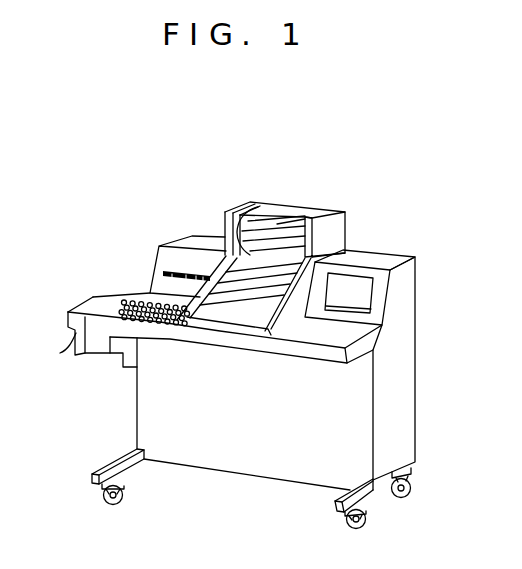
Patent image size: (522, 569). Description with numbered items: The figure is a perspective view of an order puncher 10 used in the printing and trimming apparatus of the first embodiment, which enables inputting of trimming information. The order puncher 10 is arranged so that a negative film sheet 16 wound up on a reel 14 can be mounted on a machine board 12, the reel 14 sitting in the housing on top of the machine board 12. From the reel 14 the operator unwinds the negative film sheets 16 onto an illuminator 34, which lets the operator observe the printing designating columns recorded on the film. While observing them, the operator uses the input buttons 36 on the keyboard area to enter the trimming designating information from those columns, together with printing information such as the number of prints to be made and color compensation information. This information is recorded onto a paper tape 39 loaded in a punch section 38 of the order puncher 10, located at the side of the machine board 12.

The order puncher 10 is at (370, 231).
The machine board 12 is at (403, 352).
The reel 14 is at (243, 213).
The negative film sheet 16 is at (278, 225).
The illuminator 34 is at (277, 326).
The input buttons 36 is at (158, 324).
The punch section 38 is at (91, 305).
The paper tape 39 is at (62, 350).